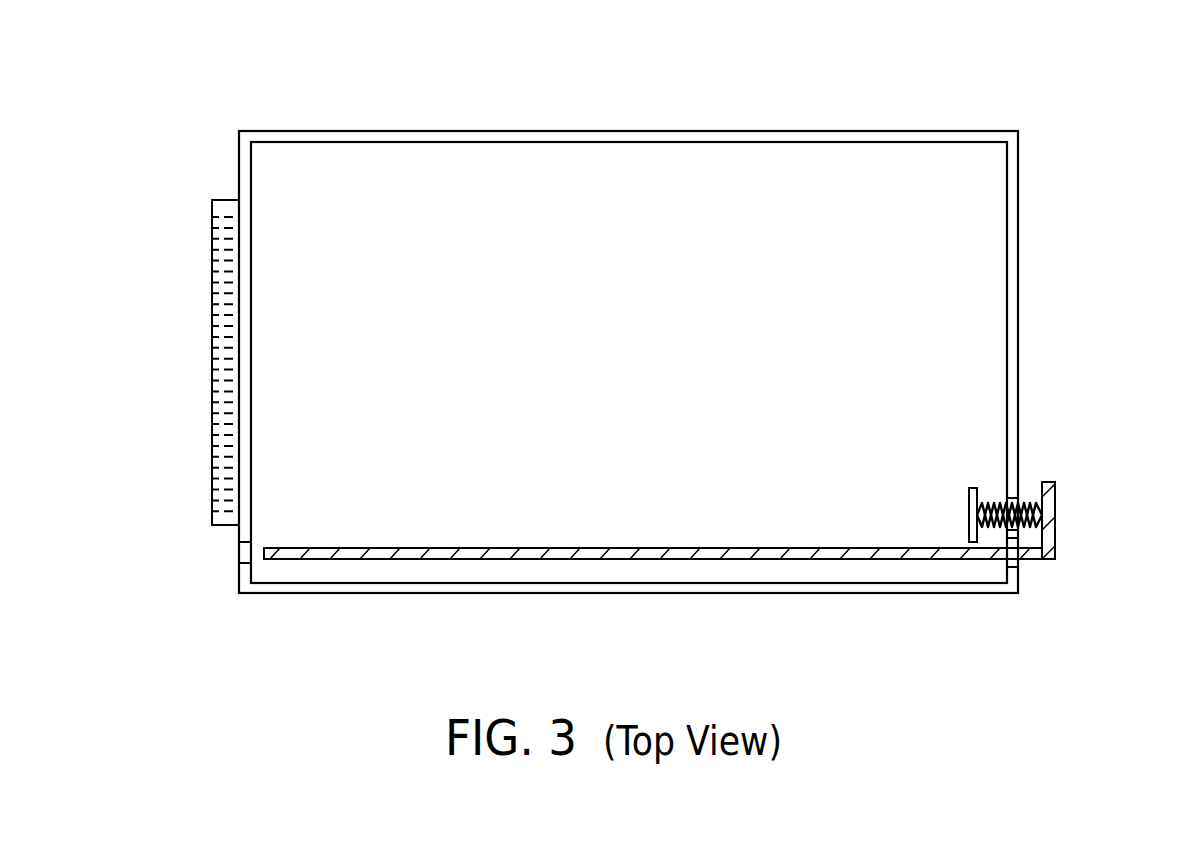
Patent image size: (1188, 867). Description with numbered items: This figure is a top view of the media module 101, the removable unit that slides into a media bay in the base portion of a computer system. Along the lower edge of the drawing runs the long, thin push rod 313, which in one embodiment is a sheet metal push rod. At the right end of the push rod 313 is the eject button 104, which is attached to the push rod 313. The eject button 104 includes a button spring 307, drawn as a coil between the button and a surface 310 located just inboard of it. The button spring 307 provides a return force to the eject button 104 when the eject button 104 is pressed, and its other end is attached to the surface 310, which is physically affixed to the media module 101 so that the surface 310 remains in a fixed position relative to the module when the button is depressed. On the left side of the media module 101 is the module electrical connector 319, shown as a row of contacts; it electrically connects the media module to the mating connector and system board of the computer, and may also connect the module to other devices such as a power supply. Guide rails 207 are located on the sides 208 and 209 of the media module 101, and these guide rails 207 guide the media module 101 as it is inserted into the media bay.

The media module 101 is at (1019, 190).
The side 209 is at (525, 130).
The module electrical connector 319 is at (211, 263).
The push rod 313 is at (525, 546).
The surface 310 is at (968, 514).
The button spring 307 is at (992, 507).
The eject button 104 is at (1057, 518).
The side 208 is at (495, 595).
The guide rail 207 is at (972, 595).